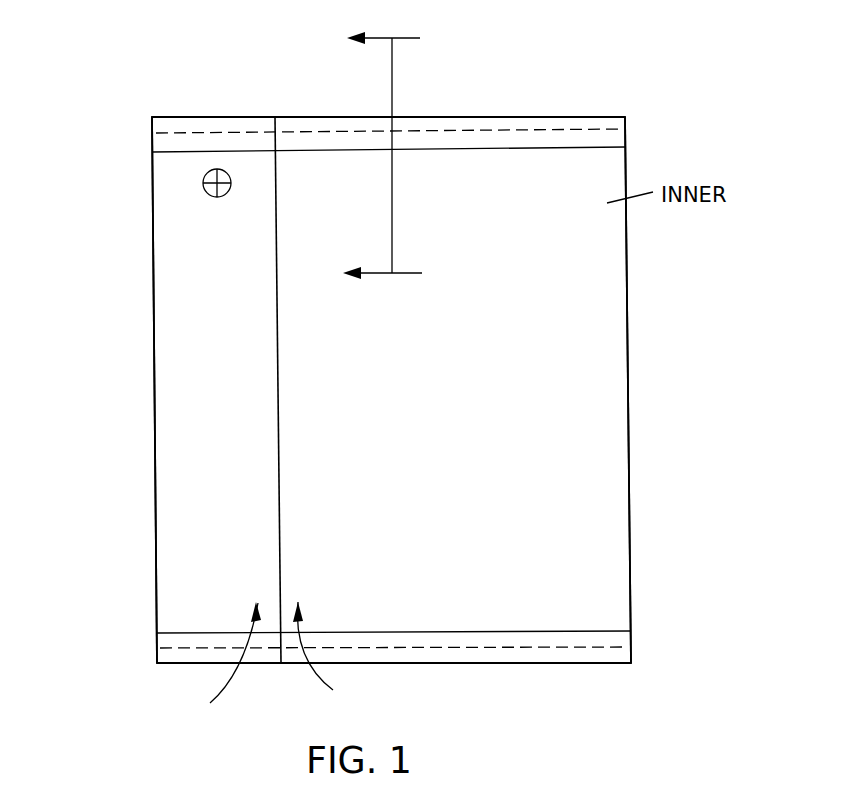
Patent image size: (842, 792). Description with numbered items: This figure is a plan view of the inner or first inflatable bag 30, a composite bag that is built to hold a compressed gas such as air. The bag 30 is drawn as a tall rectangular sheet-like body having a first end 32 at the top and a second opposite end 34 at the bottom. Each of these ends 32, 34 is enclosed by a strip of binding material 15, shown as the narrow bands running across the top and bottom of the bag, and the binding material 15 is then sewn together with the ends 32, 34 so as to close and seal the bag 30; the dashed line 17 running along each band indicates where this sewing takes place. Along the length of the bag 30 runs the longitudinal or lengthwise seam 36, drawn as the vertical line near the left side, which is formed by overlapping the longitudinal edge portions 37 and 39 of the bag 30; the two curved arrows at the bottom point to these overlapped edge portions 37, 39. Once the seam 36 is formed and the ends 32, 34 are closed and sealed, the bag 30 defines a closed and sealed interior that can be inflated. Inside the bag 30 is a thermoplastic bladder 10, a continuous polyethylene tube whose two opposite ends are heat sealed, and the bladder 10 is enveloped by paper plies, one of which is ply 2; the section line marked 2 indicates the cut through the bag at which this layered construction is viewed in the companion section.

The paper ply 2 is at (380, 159).
The thermoplastic bladder 10 is at (213, 198).
The binding material 15 is at (610, 122).
The fold line 17 is at (530, 130).
The inner inflatable bag 30 is at (572, 222).
The first end 32 is at (140, 157).
The second opposite end 34 is at (650, 616).
The longitudinal seam 36 is at (290, 400).
The longitudinal edge portion 37 is at (215, 662).
The longitudinal edge portion 39 is at (330, 652).